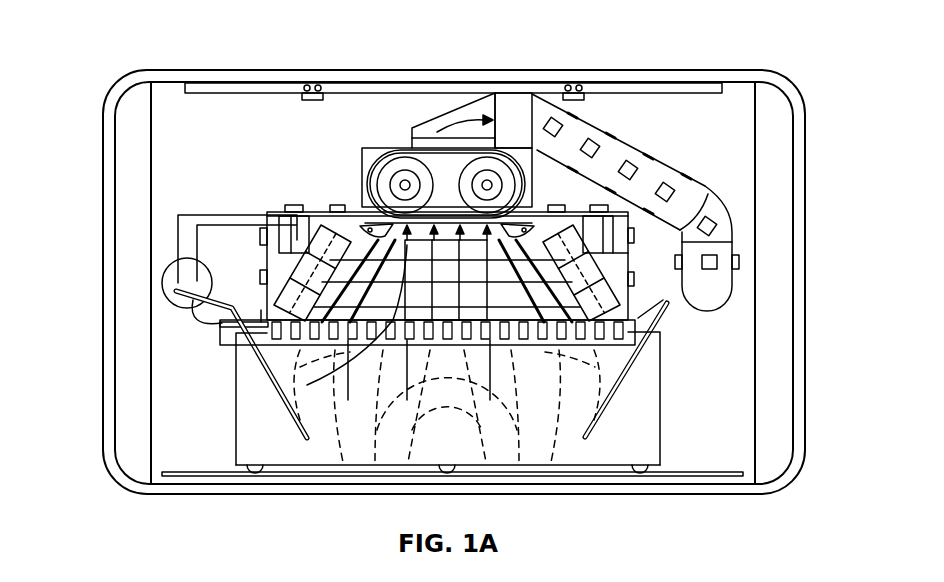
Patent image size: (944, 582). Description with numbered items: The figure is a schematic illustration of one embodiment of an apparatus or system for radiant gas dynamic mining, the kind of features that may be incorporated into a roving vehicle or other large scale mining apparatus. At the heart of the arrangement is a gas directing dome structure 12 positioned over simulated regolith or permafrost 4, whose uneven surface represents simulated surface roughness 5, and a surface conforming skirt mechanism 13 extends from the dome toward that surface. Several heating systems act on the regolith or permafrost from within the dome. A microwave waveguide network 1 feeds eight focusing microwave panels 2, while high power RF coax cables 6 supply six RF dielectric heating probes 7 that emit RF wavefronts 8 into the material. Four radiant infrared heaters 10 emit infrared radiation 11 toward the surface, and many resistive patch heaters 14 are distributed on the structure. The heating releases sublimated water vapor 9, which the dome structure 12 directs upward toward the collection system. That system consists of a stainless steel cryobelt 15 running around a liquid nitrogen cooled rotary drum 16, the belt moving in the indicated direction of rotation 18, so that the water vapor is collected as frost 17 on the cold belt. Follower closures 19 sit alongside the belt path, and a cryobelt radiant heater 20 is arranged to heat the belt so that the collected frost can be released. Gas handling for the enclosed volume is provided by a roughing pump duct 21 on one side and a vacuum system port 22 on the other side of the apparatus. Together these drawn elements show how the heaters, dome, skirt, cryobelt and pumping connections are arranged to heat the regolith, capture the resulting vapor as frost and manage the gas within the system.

The microwave waveguide network 1 is at (237, 213).
The focusing microwave panels 2 is at (330, 240).
The simulated regolith or permafrost 4 is at (648, 438).
The simulated surface roughness 5 is at (248, 433).
The high power RF coax cables 6 is at (221, 326).
The RF dielectric heating probes 7 is at (275, 386).
The RF wavefronts 8 is at (408, 431).
The sublimated water vapor 9 is at (460, 112).
The radiant infrared heaters 10 is at (360, 240).
The infrared radiation 11 is at (322, 348).
The gas directing dome structure 12 is at (622, 262).
The surface conforming skirt mechanism 13 is at (620, 333).
The resistive patch heaters 14 is at (261, 274).
The stainless steel cryobelt 15 is at (382, 163).
The liquid nitrogen cooled rotary drum 16 is at (395, 163).
The water vapor collected as frost 17 is at (530, 168).
The direction of rotation 18 is at (497, 150).
The follower closures 19 is at (445, 115).
The cryobelt radiant heater 20 is at (487, 97).
The roughing pump duct 21 is at (713, 237).
The vacuum system port 22 is at (168, 288).